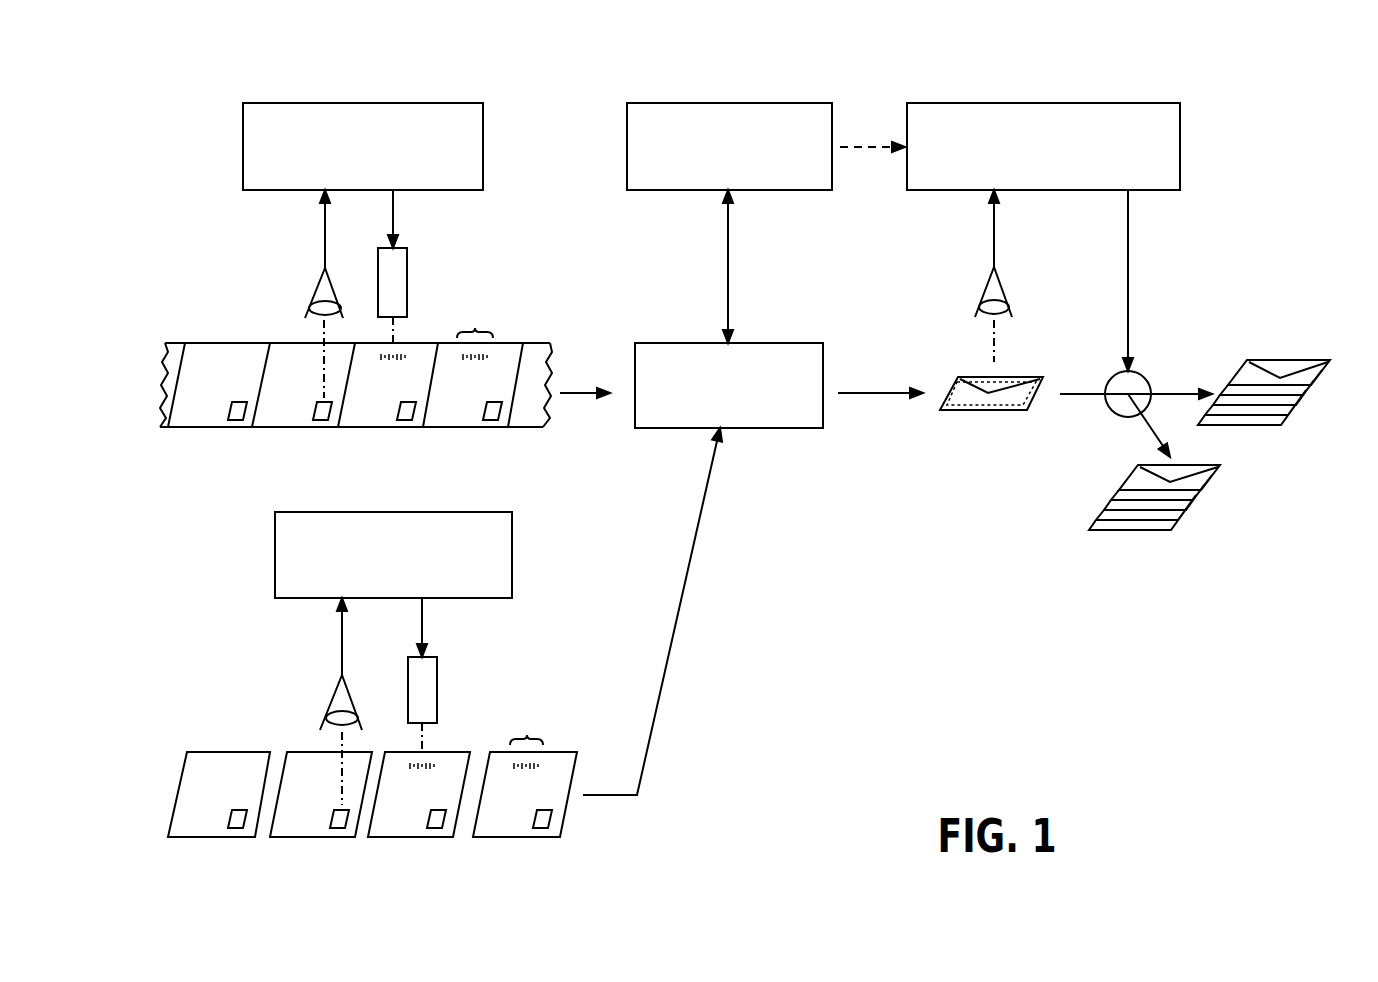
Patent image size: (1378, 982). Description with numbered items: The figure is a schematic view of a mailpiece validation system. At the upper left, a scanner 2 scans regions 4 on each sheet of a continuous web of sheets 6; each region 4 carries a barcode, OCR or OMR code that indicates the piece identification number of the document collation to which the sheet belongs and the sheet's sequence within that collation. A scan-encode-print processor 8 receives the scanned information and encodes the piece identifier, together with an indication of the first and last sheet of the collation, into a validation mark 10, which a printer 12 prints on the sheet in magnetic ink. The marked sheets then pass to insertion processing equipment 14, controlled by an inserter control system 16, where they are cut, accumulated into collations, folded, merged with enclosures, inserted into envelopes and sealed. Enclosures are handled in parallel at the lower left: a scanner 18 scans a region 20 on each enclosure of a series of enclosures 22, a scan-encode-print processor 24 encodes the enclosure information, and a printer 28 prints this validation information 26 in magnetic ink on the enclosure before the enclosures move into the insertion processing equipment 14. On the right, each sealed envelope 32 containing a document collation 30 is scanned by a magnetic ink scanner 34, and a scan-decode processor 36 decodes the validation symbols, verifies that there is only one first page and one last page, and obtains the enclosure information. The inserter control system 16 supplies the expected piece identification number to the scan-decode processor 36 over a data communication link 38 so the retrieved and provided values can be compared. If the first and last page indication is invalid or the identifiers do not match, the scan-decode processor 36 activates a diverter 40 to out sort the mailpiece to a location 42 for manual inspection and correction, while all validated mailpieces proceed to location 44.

The scanner 2 is at (318, 290).
The region 4 is at (234, 419).
The continuous web of sheets 6 is at (188, 466).
The scan-encode-print processor 8 is at (243, 148).
The mark 10 is at (475, 331).
The printer 12 is at (407, 287).
The insertion processing equipment 14 is at (697, 343).
The inserter control system 16 is at (625, 158).
The scanner 18 is at (330, 702).
The region 20 is at (238, 828).
The series of enclosures 22 is at (201, 858).
The scan-encode-print processor 24 is at (277, 578).
The validation information 26 is at (527, 738).
The printer 28 is at (437, 702).
The document collation 30 is at (997, 413).
The envelope 32 is at (953, 382).
The magnetic ink scanner 34 is at (1007, 293).
The scan-decode processor 36 is at (907, 128).
The data communication link 38 is at (853, 148).
The diverter 40 is at (1105, 382).
The location 42 is at (1142, 482).
The location 44 is at (1250, 382).